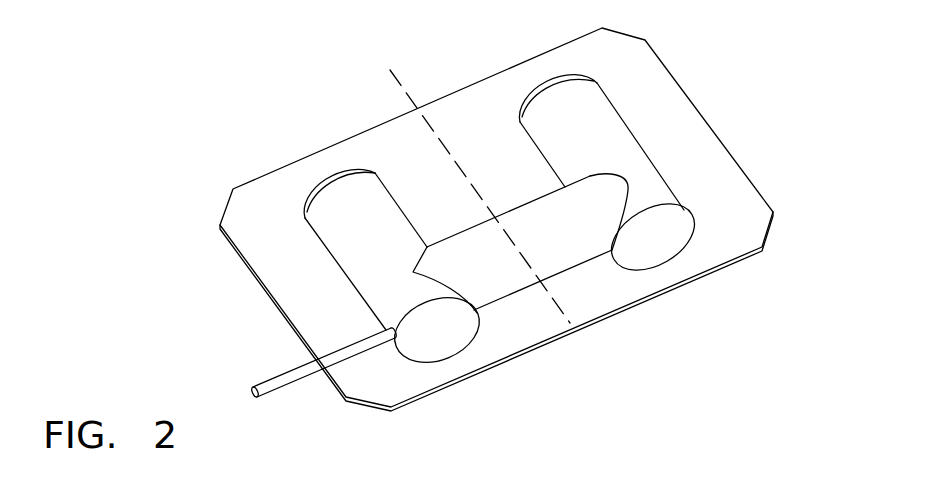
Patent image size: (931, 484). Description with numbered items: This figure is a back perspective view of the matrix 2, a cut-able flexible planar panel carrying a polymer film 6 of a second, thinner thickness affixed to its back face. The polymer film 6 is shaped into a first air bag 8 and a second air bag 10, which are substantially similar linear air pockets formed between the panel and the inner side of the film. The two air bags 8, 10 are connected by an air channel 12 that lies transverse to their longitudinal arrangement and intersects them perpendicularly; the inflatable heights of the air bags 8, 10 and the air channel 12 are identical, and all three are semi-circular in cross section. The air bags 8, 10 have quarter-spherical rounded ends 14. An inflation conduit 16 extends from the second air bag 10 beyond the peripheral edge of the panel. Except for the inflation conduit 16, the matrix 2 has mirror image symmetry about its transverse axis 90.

The matrix 2 is at (135, 209).
The polymer film 6 is at (472, 107).
The first air bag 8 is at (580, 99).
The second air bag 10 is at (338, 206).
The air channel 12 is at (545, 262).
The spherical ends 14 is at (443, 340).
The inflation conduit 16 is at (268, 380).
The transverse axis 90 is at (388, 80).